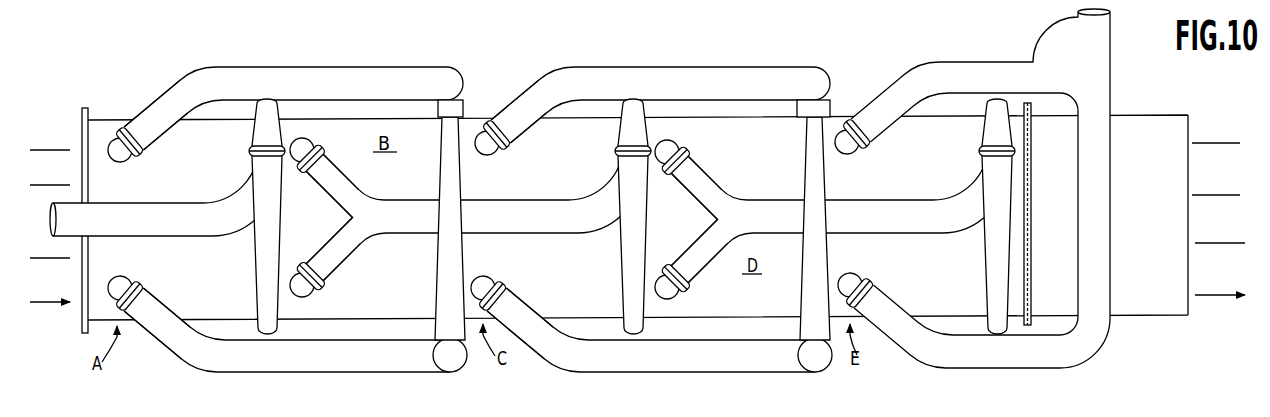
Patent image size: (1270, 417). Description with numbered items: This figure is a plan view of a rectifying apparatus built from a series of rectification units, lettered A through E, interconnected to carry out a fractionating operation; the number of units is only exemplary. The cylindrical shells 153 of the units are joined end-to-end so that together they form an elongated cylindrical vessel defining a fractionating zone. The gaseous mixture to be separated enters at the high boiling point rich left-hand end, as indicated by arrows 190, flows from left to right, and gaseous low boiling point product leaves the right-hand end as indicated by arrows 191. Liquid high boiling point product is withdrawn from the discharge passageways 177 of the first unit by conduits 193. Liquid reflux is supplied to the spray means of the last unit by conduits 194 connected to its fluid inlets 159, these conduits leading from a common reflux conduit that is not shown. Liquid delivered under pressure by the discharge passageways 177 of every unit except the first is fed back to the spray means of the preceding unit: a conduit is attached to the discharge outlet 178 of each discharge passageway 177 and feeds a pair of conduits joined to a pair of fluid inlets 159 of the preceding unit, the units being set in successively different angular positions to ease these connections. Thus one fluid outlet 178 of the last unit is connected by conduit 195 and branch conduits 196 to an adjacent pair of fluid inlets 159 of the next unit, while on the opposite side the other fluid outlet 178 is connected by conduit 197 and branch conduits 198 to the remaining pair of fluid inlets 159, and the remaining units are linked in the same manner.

The cylindrical shell 153 is at (215, 269).
The fluid inlet 159 is at (120, 140).
The discharge passageway 177 is at (270, 112).
The discharge outlet 178 is at (247, 139).
The arrows indicating gaseous mixture inlet flow 190 is at (44, 158).
The arrows indicating low boiling point product flow 191 is at (1200, 147).
The conduit 193 is at (172, 202).
The conduit 194 is at (927, 72).
The conduit 195 is at (358, 72).
The branch conduit 196 is at (160, 105).
The conduit 197 is at (320, 373).
The branch conduit 198 is at (153, 325).